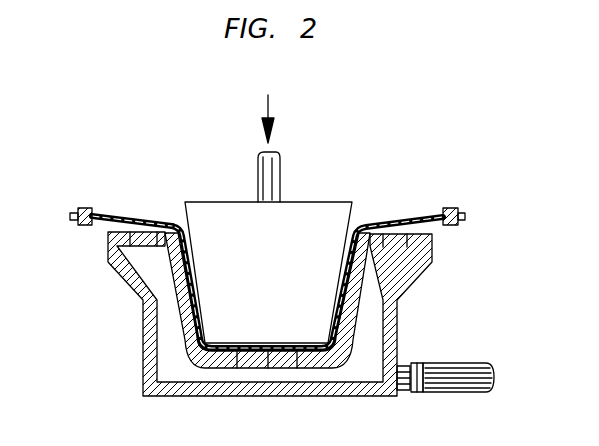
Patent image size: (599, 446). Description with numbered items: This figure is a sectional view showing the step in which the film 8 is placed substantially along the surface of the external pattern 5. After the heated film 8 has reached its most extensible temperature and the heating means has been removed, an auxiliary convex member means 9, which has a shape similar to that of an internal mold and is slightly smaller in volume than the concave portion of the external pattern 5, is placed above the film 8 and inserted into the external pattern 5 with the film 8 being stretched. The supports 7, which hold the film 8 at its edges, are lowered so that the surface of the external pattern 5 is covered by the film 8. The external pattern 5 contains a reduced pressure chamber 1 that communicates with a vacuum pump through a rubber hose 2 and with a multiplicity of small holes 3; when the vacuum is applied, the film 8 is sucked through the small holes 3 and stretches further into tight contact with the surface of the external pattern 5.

The reduced pressure chamber 1 is at (370, 303).
The rubber hose 2 is at (470, 371).
The small holes 3 is at (337, 356).
The external pattern 5 is at (267, 314).
The supports 7 is at (84, 207).
The film 8 is at (145, 223).
The auxiliary convex member means 9 is at (323, 203).